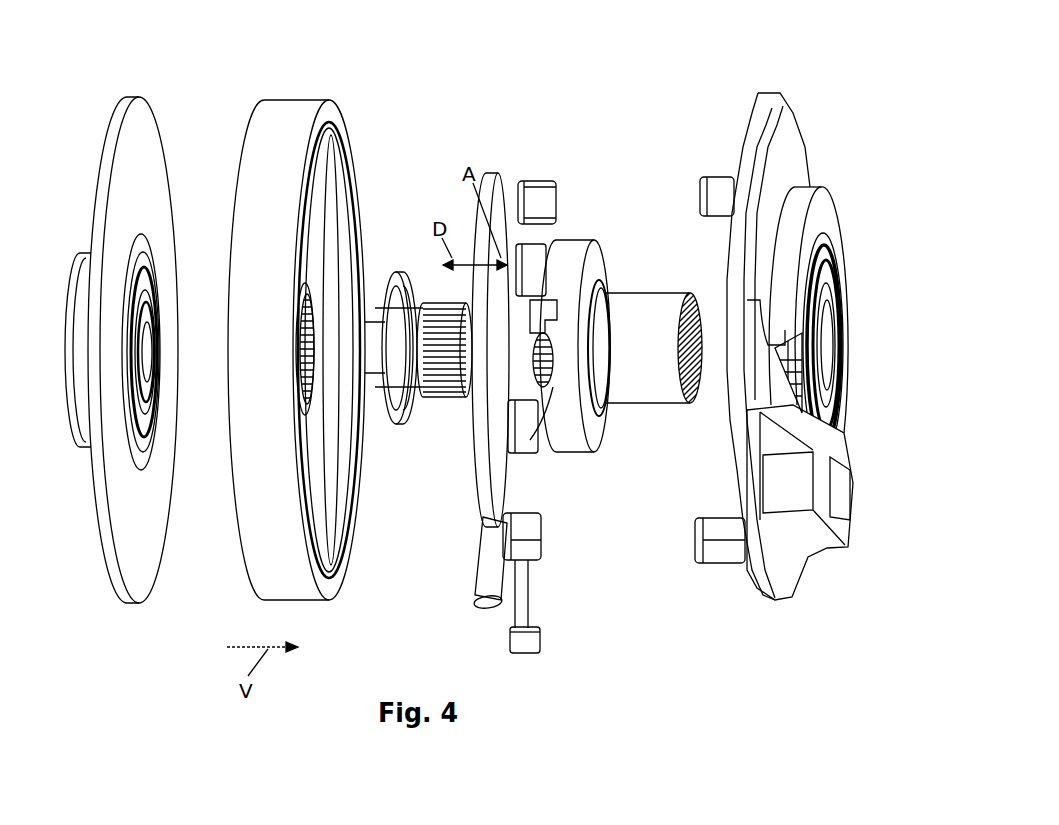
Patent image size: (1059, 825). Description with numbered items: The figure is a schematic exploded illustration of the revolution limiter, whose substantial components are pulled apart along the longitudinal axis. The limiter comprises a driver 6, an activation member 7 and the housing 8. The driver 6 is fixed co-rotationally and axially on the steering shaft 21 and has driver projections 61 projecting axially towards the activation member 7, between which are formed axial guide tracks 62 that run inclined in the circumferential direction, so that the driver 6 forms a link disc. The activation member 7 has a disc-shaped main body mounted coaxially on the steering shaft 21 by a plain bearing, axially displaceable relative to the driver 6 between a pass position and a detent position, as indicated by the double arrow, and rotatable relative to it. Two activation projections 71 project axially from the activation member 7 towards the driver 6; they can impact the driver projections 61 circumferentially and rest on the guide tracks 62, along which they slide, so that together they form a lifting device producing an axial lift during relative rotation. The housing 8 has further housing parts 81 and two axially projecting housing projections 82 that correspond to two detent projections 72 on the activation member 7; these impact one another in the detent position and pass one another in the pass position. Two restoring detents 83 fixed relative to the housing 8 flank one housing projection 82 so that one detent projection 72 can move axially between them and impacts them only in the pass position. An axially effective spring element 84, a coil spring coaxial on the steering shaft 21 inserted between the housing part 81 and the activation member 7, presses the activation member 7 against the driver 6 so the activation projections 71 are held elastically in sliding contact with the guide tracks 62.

The housing part 81 is at (268, 137).
The activation member 7 is at (495, 183).
The detent projection 72 is at (538, 197).
The driver 6 is at (572, 255).
The driver projection 61 is at (538, 312).
The steering shaft 21 is at (653, 312).
The housing 8 is at (790, 140).
The housing projection 82 is at (722, 177).
The activation projection 71 is at (523, 427).
The guide track 62 is at (552, 387).
The spring element 84 is at (393, 428).
The restoring detent 83 is at (487, 612).